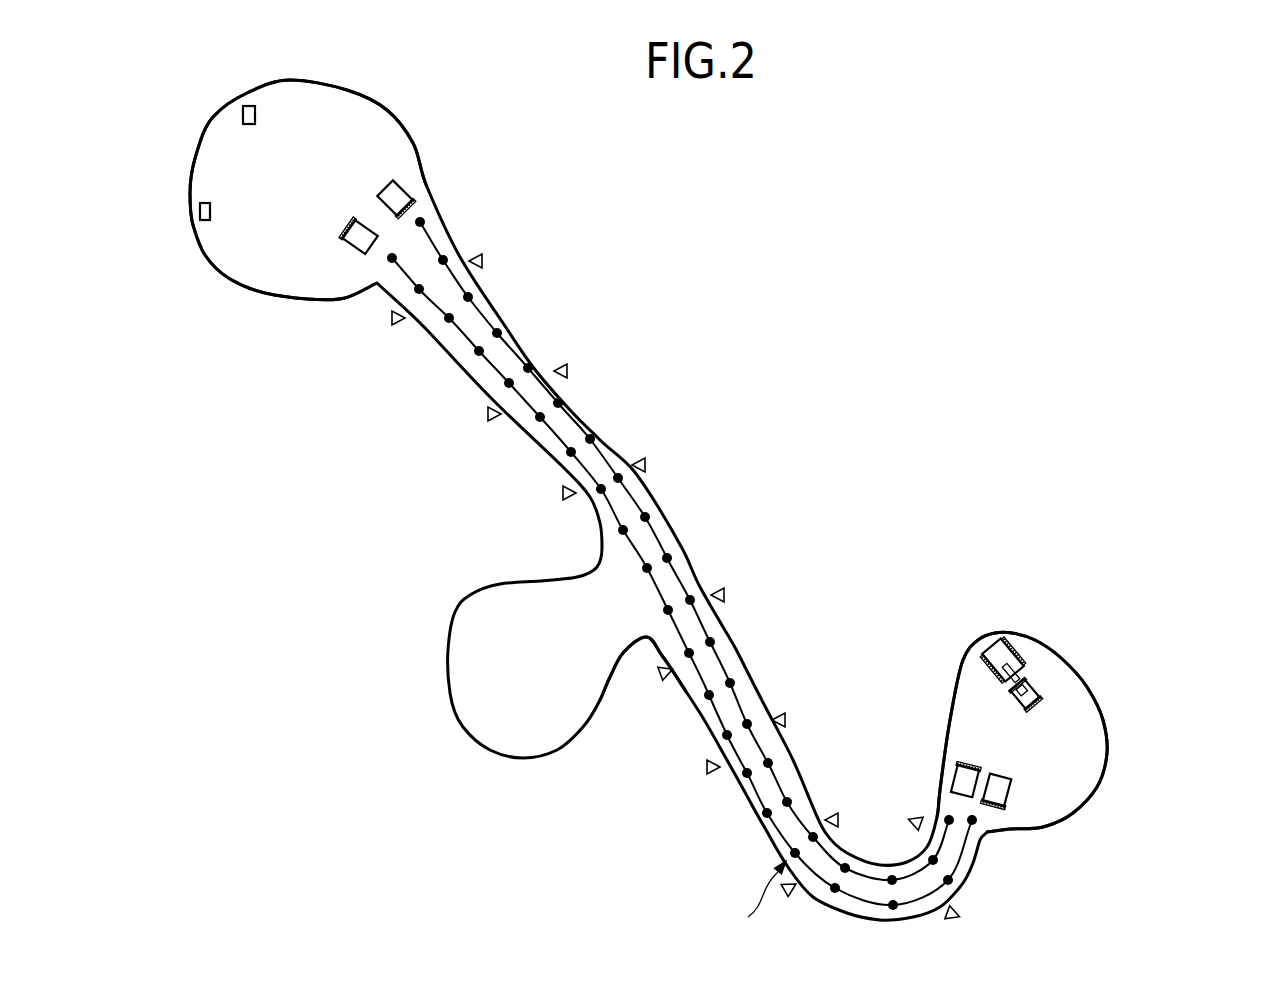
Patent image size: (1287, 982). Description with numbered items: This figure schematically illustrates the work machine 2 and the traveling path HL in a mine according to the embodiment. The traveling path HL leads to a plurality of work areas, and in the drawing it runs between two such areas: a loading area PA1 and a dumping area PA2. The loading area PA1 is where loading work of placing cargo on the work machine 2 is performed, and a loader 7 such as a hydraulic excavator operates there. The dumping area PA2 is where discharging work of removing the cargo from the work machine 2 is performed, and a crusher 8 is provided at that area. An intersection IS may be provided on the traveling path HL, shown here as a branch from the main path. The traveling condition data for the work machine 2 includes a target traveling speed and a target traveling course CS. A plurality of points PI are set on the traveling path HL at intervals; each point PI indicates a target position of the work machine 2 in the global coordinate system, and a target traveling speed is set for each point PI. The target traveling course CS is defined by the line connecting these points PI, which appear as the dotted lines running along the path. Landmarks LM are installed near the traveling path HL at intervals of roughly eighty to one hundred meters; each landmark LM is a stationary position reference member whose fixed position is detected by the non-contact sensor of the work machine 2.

The work machine 2 is at (398, 183).
The loader 7 is at (999, 640).
The crusher 8 is at (248, 105).
The target traveling course CS is at (762, 752).
The point PI is at (560, 402).
The landmark LM is at (484, 262).
The intersection IS is at (644, 646).
The traveling path HL is at (751, 897).
The loading area PA1 is at (1086, 771).
The dumping area PA2 is at (344, 152).